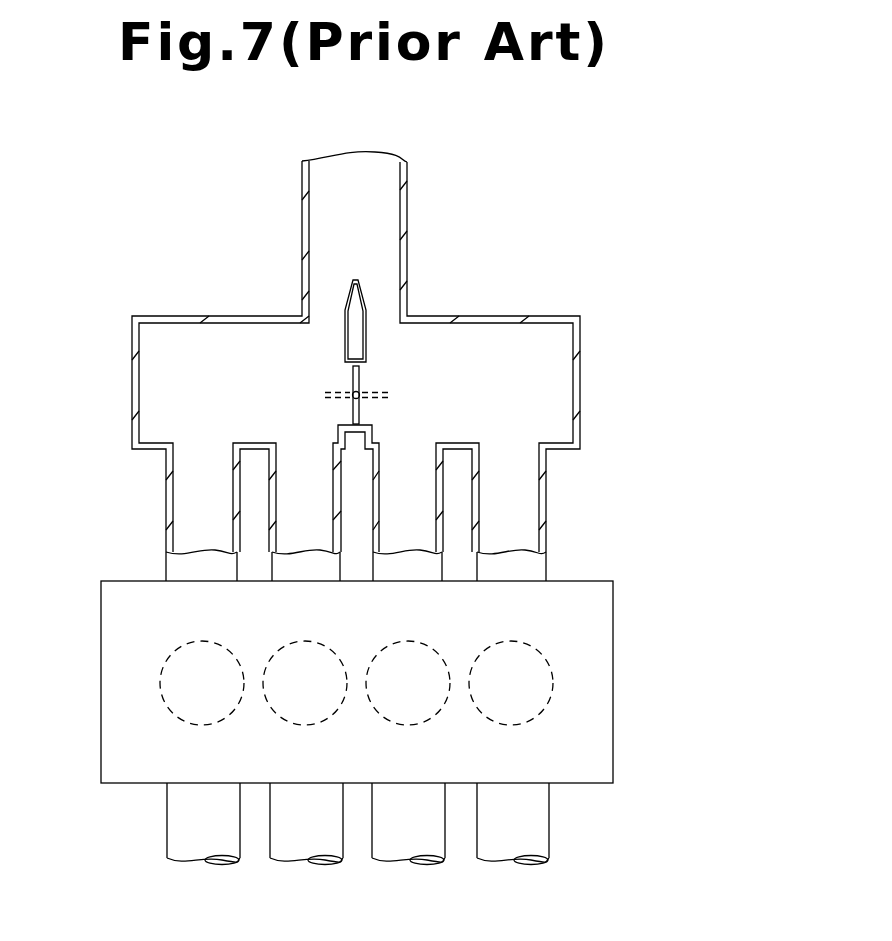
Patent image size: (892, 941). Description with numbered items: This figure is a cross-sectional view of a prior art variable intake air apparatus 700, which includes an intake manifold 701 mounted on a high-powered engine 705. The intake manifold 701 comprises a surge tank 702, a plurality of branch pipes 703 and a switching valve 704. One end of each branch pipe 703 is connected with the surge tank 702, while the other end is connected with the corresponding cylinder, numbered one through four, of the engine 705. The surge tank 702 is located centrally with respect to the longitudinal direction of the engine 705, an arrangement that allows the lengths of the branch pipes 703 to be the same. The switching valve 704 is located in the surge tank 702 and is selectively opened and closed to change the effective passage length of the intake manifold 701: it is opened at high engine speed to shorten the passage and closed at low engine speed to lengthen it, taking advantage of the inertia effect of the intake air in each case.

The variable intake air apparatus 700 is at (742, 172).
The intake manifold 701 is at (132, 340).
The surge tank 702 is at (580, 340).
The branch pipes 703 is at (269, 545).
The switching valve 704 is at (362, 376).
The high-powered engine 705 is at (613, 652).